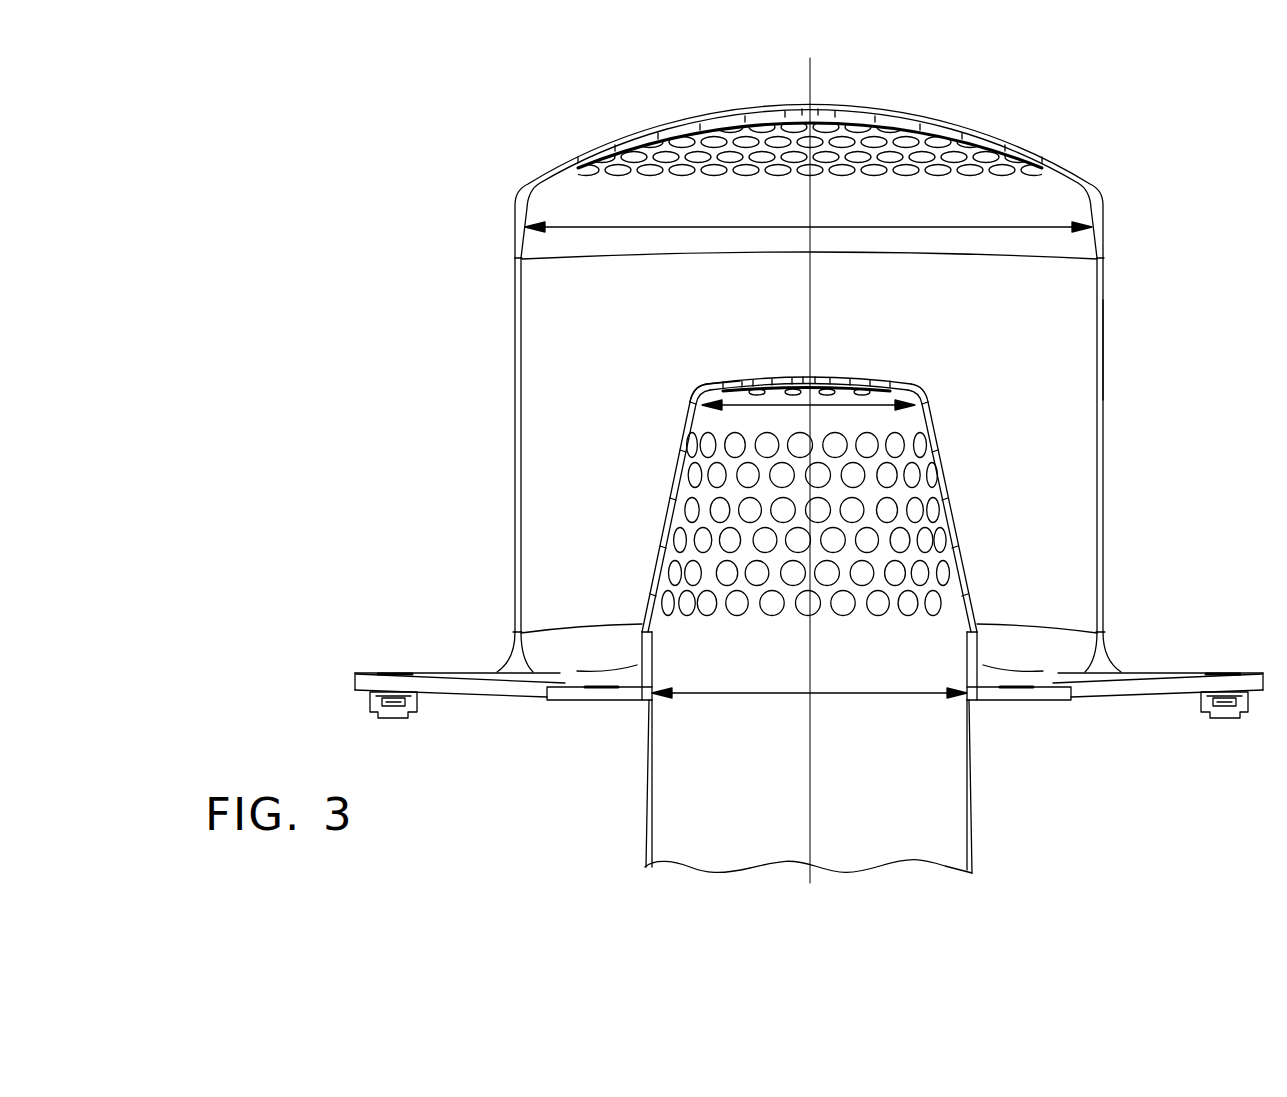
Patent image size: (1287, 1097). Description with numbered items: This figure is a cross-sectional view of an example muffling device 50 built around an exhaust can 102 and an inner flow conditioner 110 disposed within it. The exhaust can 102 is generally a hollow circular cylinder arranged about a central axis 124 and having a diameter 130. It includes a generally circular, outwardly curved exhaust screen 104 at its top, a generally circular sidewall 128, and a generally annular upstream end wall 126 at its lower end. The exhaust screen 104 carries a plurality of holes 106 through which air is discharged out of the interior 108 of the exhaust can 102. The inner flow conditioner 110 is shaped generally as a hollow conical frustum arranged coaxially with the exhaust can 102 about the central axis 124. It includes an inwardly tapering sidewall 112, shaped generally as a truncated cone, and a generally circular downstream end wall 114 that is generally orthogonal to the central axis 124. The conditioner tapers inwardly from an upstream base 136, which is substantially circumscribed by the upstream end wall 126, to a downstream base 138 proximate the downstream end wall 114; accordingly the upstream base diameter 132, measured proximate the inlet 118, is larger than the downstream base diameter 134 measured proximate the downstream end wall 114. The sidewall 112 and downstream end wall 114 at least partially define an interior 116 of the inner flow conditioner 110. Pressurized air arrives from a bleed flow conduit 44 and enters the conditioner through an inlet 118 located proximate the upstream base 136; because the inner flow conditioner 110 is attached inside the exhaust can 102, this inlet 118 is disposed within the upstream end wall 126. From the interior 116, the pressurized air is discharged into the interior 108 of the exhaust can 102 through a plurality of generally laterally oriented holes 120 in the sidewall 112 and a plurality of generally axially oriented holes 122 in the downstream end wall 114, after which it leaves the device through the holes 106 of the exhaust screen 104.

The bleed flow conduit 44 is at (972, 827).
The muffling device 50 is at (392, 335).
The exhaust can 102 is at (809, 407).
The exhaust screen 104 is at (809, 164).
The holes 106 is at (975, 138).
The interior 108 is at (622, 274).
The inner flow conditioner 110 is at (810, 552).
The sidewall 112 is at (955, 545).
The downstream end wall 114 is at (737, 381).
The interior 116 is at (740, 418).
The inlet 118 is at (702, 709).
The holes 120 is at (937, 452).
The holes 122 is at (817, 378).
The central axis 124 is at (812, 93).
The upstream end wall 126 is at (525, 692).
The sidewall 128 is at (1104, 333).
The diameter 130 is at (1040, 227).
The upstream base diameter 132 is at (913, 697).
The downstream base diameter 134 is at (880, 404).
The upstream base 136 is at (972, 663).
The downstream base 138 is at (692, 392).